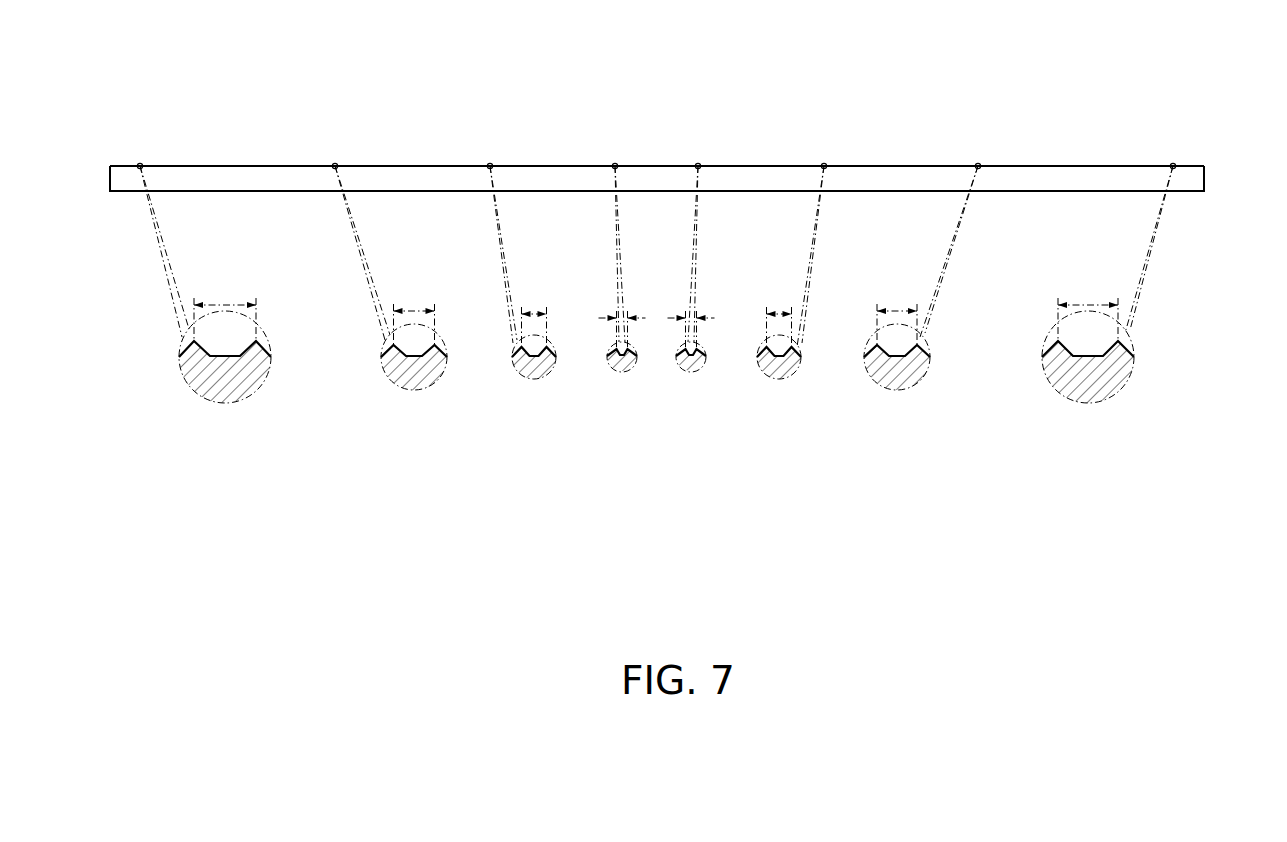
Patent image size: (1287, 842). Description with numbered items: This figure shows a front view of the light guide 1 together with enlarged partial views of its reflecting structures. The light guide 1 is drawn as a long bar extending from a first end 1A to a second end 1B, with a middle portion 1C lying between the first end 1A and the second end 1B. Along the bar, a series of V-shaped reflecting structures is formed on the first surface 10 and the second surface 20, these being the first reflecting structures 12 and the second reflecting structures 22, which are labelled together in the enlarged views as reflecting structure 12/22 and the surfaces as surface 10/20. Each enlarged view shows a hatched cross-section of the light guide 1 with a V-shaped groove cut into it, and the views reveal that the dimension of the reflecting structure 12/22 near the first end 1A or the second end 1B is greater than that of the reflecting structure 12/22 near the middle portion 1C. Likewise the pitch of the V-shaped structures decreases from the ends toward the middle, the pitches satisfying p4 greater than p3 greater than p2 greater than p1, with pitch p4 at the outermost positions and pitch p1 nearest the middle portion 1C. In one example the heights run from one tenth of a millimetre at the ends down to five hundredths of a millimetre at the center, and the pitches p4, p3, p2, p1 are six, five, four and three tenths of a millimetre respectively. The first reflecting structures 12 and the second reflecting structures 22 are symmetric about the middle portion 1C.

The light guide 1 is at (668, 60).
The first end 1A is at (117, 176).
The second end 1B is at (1193, 176).
The middle portion 1C is at (657, 166).
The first surface 10 is at (241, 284).
The second surface 20 is at (222, 355).
The first reflecting structure 12 is at (655, 294).
The second reflecting structure 22 is at (655, 294).
The pitch p1 is at (656, 311).
The pitch p2 is at (655, 309).
The pitch p3 is at (656, 308).
The pitch p4 is at (656, 301).